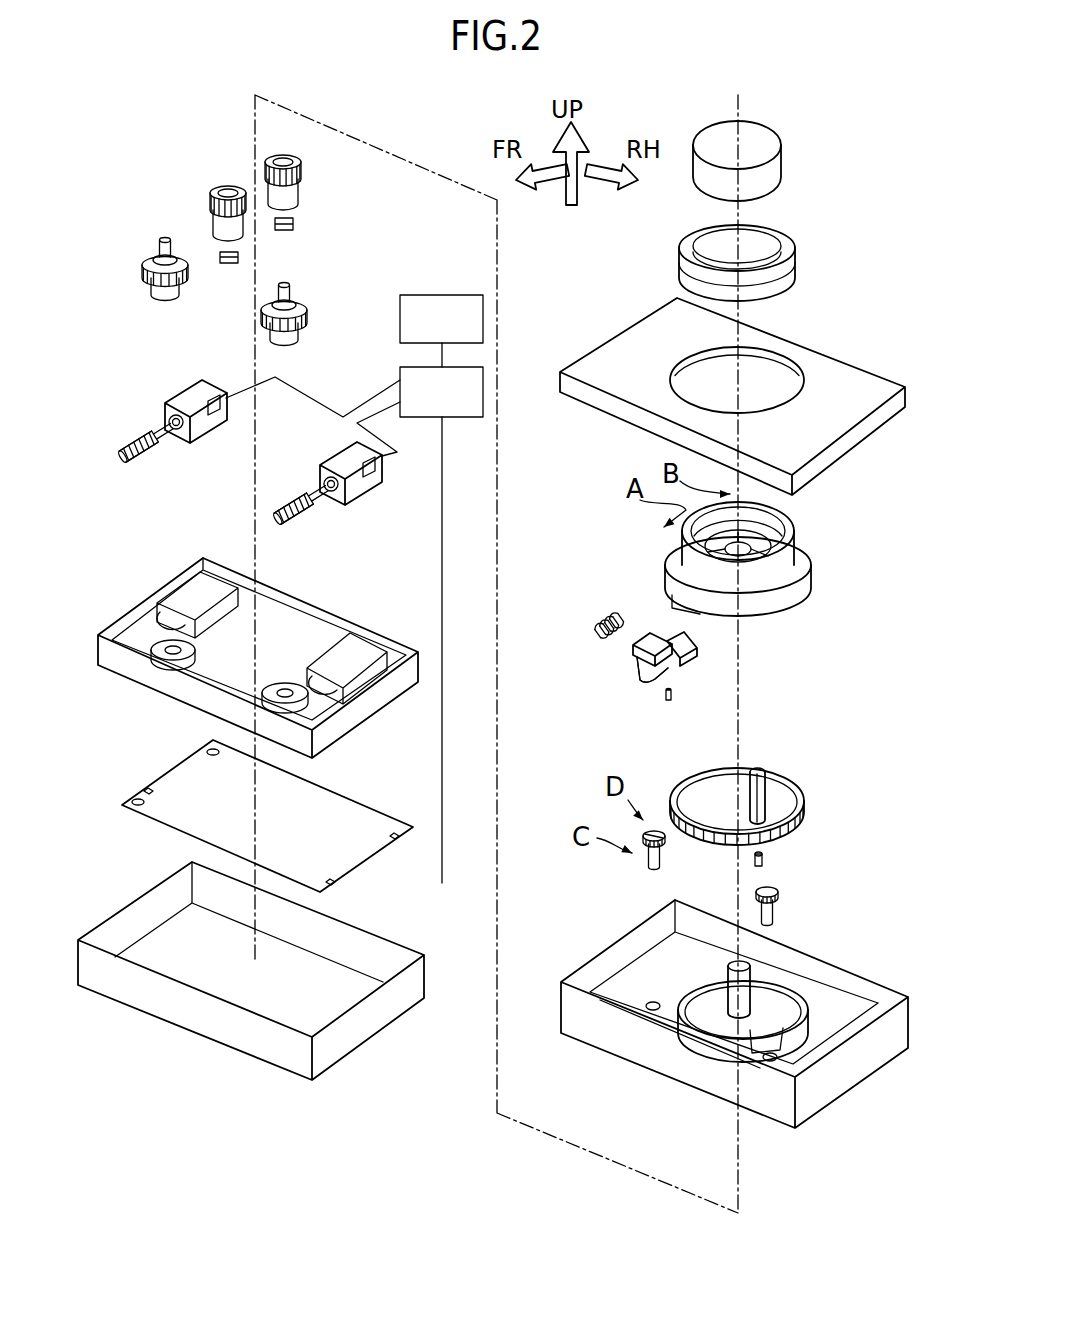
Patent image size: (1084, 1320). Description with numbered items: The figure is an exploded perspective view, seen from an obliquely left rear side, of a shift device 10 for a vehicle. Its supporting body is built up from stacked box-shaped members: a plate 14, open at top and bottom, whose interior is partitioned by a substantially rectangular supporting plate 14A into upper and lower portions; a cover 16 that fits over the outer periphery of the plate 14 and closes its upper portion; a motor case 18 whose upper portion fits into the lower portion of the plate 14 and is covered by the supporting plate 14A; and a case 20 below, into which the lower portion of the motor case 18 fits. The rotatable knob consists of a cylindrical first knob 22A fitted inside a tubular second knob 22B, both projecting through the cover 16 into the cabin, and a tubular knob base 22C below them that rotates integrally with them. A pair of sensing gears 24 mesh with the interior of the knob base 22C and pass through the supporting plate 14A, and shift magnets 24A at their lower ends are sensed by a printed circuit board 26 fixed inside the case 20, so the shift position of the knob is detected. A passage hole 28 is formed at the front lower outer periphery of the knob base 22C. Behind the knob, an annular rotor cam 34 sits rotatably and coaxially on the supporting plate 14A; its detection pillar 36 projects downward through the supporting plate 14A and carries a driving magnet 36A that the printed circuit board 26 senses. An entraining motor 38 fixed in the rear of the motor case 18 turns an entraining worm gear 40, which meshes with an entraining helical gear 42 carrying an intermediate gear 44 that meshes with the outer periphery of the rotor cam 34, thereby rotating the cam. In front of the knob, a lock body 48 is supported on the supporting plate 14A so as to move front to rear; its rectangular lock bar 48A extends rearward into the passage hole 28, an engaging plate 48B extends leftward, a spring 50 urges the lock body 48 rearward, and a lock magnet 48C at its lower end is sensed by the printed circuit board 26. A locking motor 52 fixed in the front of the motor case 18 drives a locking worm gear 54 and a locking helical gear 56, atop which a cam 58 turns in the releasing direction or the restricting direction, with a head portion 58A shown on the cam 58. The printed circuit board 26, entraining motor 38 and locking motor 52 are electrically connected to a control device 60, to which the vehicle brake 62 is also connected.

The shift device 10 is at (897, 183).
The plate 14 is at (810, 952).
The supporting plate 14A is at (615, 990).
The cover 16 is at (842, 360).
The motor case 18 is at (147, 602).
The case 20 is at (152, 887).
The first knob 22A is at (800, 125).
The second knob 22B is at (795, 255).
The knob base 22C is at (803, 556).
The sensing gears 24 is at (210, 200).
The shift magnets 24A is at (228, 265).
The printed circuit board 26 is at (164, 773).
The passage hole 28 is at (658, 588).
The rotor cam 34 is at (807, 793).
The detection pillar 36 is at (770, 803).
The driving magnet 36A is at (763, 858).
The entraining motor 38 is at (358, 493).
The entraining worm gear 40 is at (303, 522).
The entraining helical gear 42 is at (305, 305).
The intermediate gear 44 is at (778, 895).
The lock body 48 is at (633, 657).
The lock bar 48A is at (687, 663).
The engaging plate 48B is at (640, 680).
The lock magnet 48C is at (668, 702).
The spring 50 is at (592, 632).
The locking motor 52 is at (213, 437).
The locking worm gear 54 is at (137, 435).
The locking helical gear 56 is at (142, 280).
The cam 58 is at (647, 860).
The pin head 58A is at (665, 840).
The control device 60 is at (400, 378).
The brake 62 is at (400, 320).